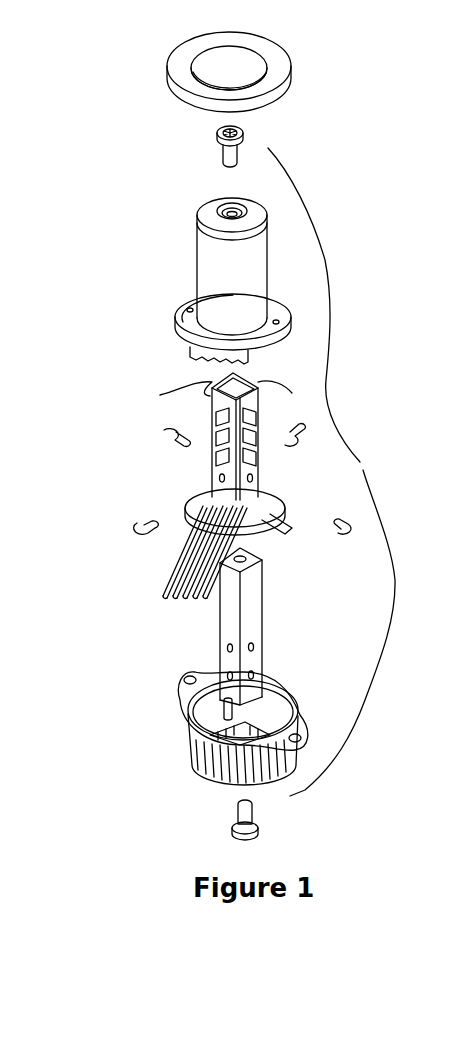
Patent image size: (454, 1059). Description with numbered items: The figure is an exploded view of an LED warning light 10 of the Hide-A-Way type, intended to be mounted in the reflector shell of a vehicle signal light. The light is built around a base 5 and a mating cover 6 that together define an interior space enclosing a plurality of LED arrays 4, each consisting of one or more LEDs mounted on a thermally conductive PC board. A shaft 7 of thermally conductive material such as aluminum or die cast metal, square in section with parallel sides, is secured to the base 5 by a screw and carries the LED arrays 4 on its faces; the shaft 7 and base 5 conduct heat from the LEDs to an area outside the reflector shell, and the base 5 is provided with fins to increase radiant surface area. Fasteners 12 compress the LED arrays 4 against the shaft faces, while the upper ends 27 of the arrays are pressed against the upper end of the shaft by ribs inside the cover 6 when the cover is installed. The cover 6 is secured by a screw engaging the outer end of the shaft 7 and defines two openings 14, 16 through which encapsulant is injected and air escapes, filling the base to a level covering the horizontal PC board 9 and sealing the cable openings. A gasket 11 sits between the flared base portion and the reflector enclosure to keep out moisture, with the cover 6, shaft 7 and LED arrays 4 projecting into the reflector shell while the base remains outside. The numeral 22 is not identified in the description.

The LED array 4 is at (212, 446).
The base 5 is at (177, 722).
The cover 6 is at (172, 323).
The shaft 7 is at (220, 620).
The horizontal PC board 9 is at (190, 528).
The LED warning light 10 is at (360, 462).
The gasket 11 is at (172, 94).
The fastener 12 is at (135, 527).
The opening 14 is at (288, 292).
The opening 16 is at (196, 308).
The cap line 22 is at (290, 384).
The upper end of LED array 27 is at (196, 388).